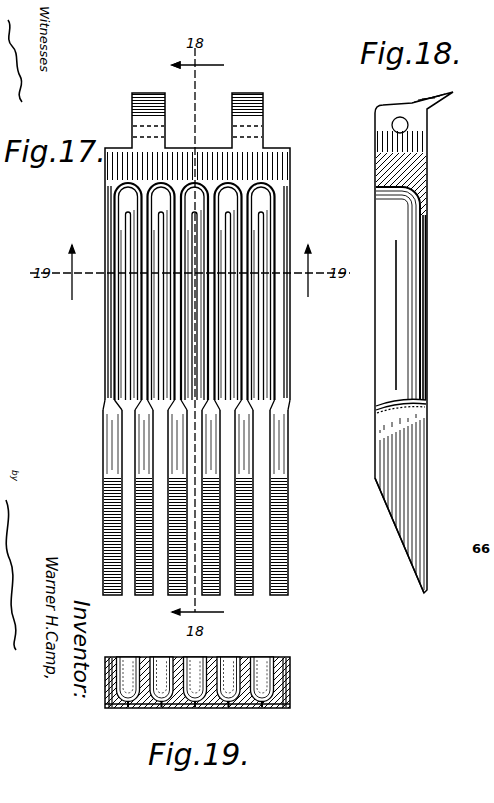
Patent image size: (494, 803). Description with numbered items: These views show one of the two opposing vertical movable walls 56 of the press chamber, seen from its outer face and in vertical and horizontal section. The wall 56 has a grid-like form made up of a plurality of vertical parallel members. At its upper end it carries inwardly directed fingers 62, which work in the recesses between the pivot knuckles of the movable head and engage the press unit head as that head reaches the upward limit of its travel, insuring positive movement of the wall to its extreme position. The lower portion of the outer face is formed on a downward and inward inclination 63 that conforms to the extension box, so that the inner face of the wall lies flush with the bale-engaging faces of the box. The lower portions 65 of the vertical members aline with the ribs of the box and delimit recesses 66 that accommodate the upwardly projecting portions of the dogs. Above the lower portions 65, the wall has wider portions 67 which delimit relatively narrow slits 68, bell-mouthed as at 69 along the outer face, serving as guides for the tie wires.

In FIG. 17, the vertical wall 56 is at (292, 337).
In FIG. 18, the vertical wall 56 is at (374, 397).
In FIG. 19, the vertical wall 56 is at (292, 682).
In FIG. 17, the inwardly directed finger 62 is at (140, 99).
In FIG. 18, the inwardly directed finger 62 is at (423, 98).
In FIG. 17, the downward and inward inclination 63 is at (280, 540).
In FIG. 18, the downward and inward inclination 63 is at (394, 525).
In FIG. 17, the lower portion of vertical parallel member 65 is at (250, 438).
In FIG. 18, the lower portion of vertical parallel member 65 is at (415, 437).
In FIG. 17, the recess 66 is at (198, 507).
In FIG. 18, the recess 66 is at (415, 477).
In FIG. 19, the wider portion 67 is at (109, 708).
In FIG. 17, the slit 68 is at (160, 222).
In FIG. 18, the slit 68 is at (422, 345).
In FIG. 19, the slit 68 is at (135, 708).
In FIG. 17, the bell mouth 69 is at (120, 358).
In FIG. 18, the bell mouth 69 is at (405, 298).
In FIG. 19, the bell mouth 69 is at (257, 653).